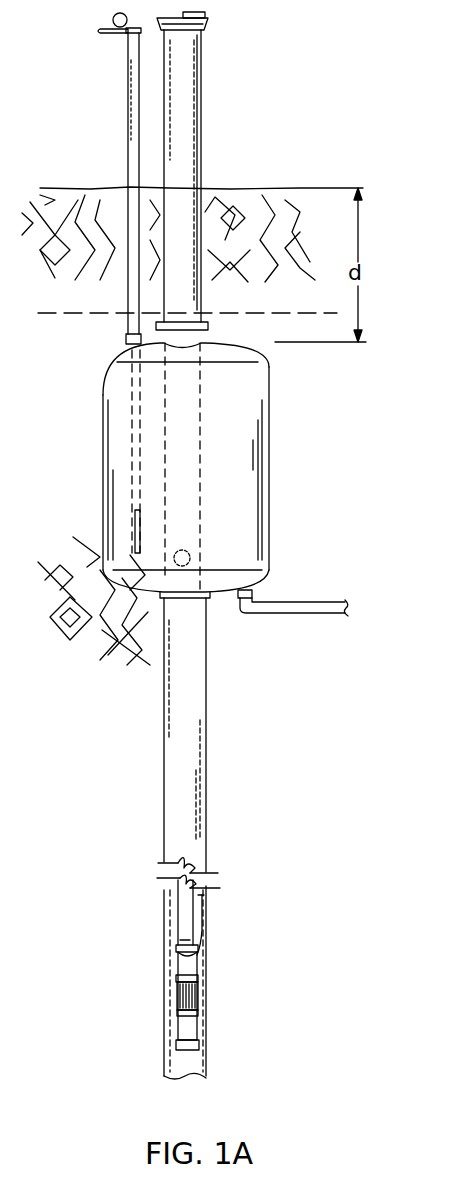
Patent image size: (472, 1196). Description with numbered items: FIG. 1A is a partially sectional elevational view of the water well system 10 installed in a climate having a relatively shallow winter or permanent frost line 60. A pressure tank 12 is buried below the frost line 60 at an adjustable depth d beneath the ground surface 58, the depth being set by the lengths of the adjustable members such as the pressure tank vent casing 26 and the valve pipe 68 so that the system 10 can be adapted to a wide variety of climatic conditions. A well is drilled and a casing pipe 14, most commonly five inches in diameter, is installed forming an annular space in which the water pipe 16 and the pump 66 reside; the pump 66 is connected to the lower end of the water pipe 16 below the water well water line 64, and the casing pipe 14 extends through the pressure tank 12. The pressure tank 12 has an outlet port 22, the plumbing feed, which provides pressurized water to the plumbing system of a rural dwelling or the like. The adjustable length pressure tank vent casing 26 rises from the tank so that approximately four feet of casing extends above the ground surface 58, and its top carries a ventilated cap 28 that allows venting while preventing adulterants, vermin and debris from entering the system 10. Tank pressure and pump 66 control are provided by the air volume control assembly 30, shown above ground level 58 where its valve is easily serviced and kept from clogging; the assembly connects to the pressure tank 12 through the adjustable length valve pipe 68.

The water well system 10 is at (288, 128).
The pressure tank 12 is at (258, 481).
The casing pipe 14 is at (172, 720).
The water pipe 16 is at (188, 916).
The outlet port 22 is at (300, 612).
The pressure tank vent casing 26 is at (224, 171).
The ventilated cap 28 is at (210, 20).
The air volume control assembly 30 is at (93, 178).
The ground surface 58 is at (297, 188).
The frost line 60 is at (78, 318).
The water well water line 64 is at (200, 958).
The pump 66 is at (197, 998).
The valve pipe 68 is at (128, 80).